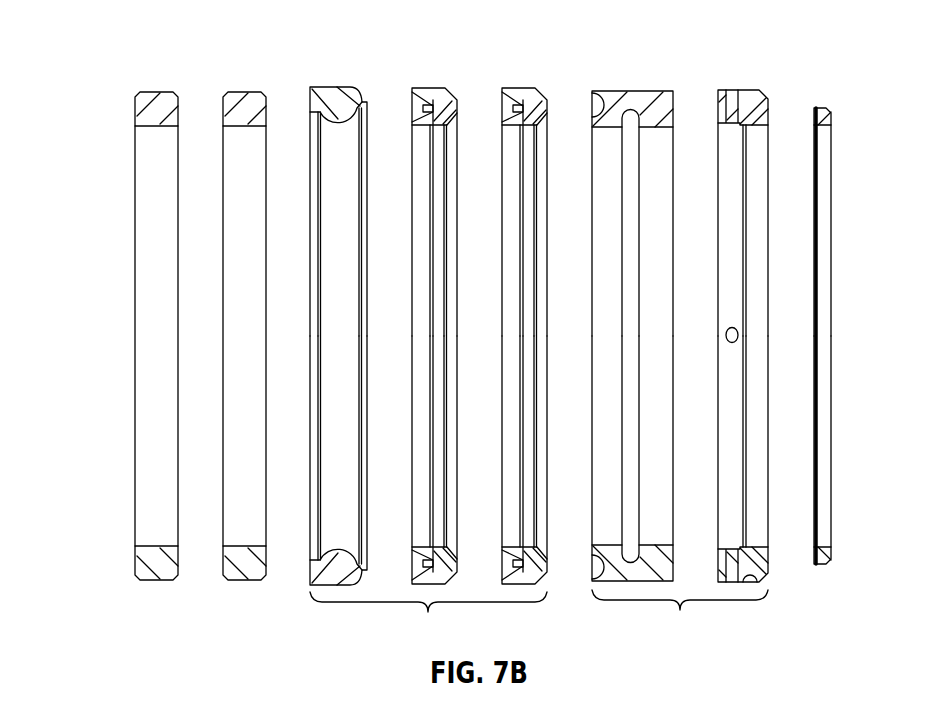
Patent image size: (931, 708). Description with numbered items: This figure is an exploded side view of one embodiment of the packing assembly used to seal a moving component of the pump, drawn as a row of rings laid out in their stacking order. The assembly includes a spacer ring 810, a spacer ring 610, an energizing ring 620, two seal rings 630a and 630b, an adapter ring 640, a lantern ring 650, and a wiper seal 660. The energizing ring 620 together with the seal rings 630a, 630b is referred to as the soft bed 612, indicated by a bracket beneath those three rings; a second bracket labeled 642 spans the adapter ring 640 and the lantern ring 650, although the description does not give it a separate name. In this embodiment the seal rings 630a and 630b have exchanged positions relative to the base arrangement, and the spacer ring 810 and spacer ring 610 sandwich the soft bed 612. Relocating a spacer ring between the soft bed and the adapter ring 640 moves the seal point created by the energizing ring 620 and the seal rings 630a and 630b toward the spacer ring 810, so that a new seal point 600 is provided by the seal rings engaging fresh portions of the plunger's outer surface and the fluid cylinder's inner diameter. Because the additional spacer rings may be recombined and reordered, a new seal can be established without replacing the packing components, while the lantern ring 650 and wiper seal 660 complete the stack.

The seal point 600 is at (124, 19).
The spacer ring 810 is at (162, 102).
The spacer ring 610 is at (248, 102).
The soft bed 612 is at (422, 343).
The energizing ring 620 is at (333, 100).
The seal ring 630a is at (435, 100).
The seal ring 630b is at (525, 100).
The retainer assembly 642 is at (680, 340).
The second adapter ring 640 is at (633, 100).
The lantern ring 650 is at (752, 100).
The wiper seal 660 is at (827, 118).